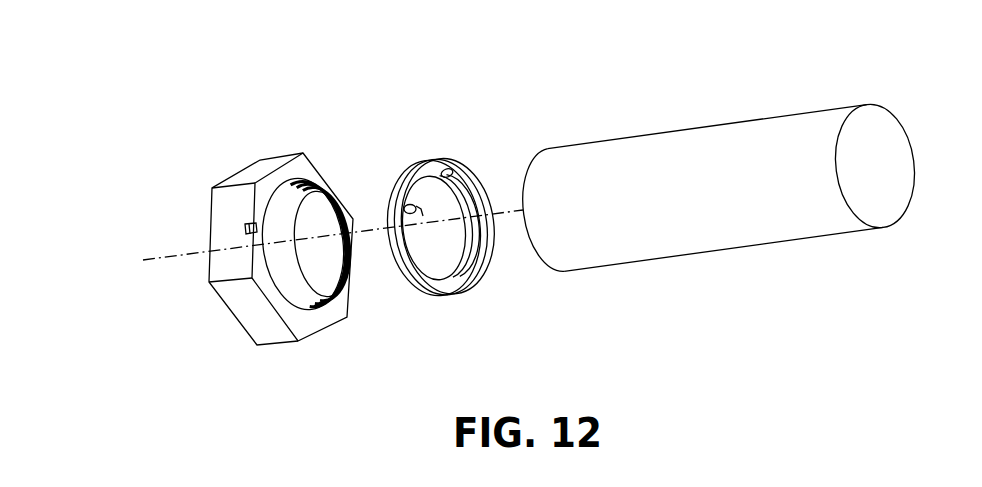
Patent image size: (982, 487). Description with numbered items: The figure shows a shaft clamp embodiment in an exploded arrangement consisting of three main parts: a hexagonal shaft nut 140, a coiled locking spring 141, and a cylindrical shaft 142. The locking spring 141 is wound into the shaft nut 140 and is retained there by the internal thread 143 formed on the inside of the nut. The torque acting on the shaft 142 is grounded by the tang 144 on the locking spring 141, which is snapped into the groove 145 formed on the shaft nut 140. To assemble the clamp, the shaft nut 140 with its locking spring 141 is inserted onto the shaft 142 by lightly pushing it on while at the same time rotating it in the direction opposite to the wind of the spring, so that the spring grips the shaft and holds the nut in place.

The shaft nut 140 is at (205, 203).
The locking spring 141 is at (468, 292).
The shaft 142 is at (723, 258).
The internal thread 143 is at (307, 185).
The tang 144 is at (427, 195).
The groove 145 is at (246, 230).